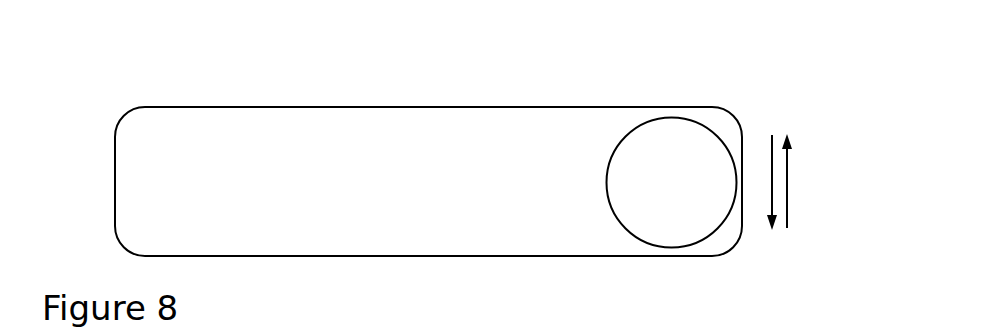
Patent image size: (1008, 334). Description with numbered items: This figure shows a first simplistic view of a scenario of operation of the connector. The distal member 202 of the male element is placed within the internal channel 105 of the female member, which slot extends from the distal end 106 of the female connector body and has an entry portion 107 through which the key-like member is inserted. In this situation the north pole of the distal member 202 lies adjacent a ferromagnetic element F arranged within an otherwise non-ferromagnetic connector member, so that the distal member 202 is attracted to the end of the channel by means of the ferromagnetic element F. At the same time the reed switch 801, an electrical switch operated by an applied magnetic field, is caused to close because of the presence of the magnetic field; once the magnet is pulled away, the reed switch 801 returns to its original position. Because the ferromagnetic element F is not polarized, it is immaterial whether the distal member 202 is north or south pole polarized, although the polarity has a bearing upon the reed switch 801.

The slot 105 is at (115, 143).
The entry portion 107 is at (120, 33).
The distal member 202 is at (672, 183).
The reed switch 801 is at (789, 188).
The distal end 106 is at (738, 170).